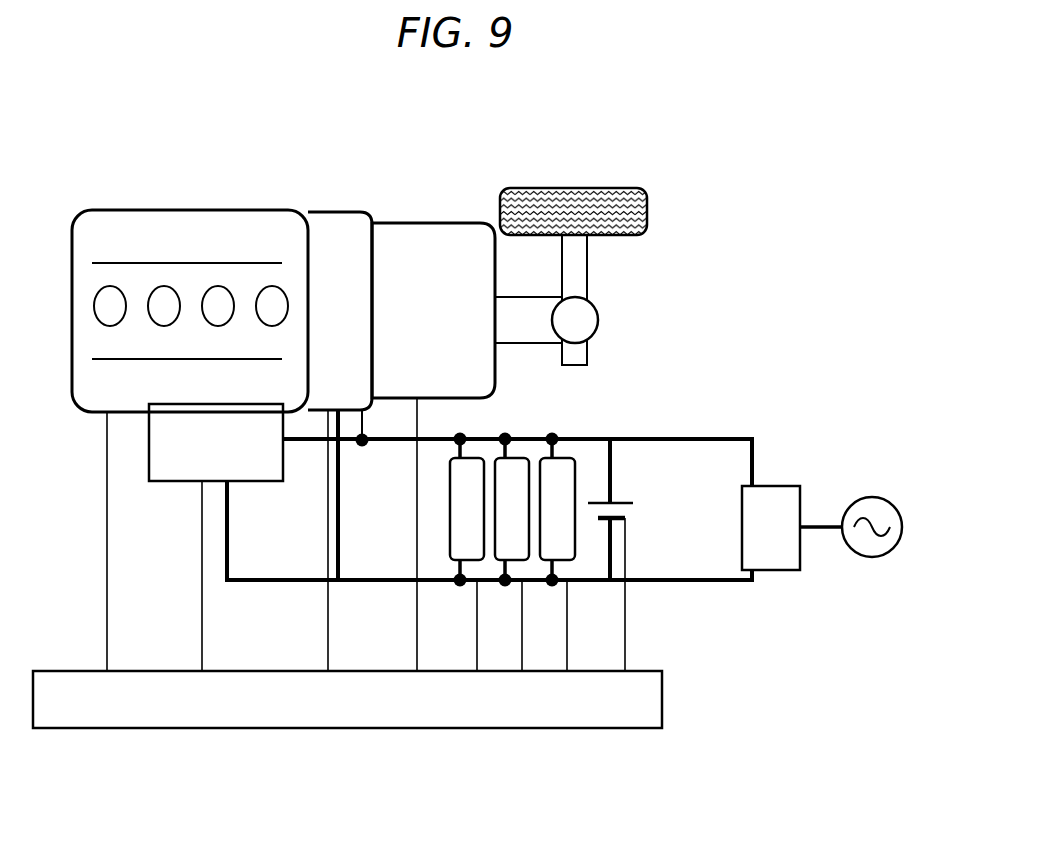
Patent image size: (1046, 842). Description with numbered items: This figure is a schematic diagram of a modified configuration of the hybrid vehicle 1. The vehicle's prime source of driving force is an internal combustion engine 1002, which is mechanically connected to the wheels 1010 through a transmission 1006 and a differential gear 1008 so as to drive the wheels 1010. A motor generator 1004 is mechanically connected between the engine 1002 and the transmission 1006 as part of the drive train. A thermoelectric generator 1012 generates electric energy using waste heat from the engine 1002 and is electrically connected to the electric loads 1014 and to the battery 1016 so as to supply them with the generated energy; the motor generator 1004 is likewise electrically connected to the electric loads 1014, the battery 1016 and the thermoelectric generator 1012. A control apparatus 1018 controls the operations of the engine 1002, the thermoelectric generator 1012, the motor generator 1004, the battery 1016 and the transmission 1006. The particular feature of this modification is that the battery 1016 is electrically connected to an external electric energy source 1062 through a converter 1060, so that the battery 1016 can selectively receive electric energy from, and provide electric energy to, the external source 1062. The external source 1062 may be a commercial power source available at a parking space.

The hybrid vehicle 1 is at (623, 125).
The internal combustion engine 1002 is at (128, 208).
The motor generator 1004 is at (340, 208).
The transmission 1006 is at (428, 220).
The differential gear 1008 is at (600, 320).
The wheels 1010 is at (650, 210).
The thermoelectric generator 1012 is at (170, 481).
The electric loads 1014 is at (470, 457).
The battery 1016 is at (628, 502).
The control apparatus 1018 is at (662, 697).
The converter 1060 is at (772, 480).
The external electric energy source 1062 is at (865, 557).